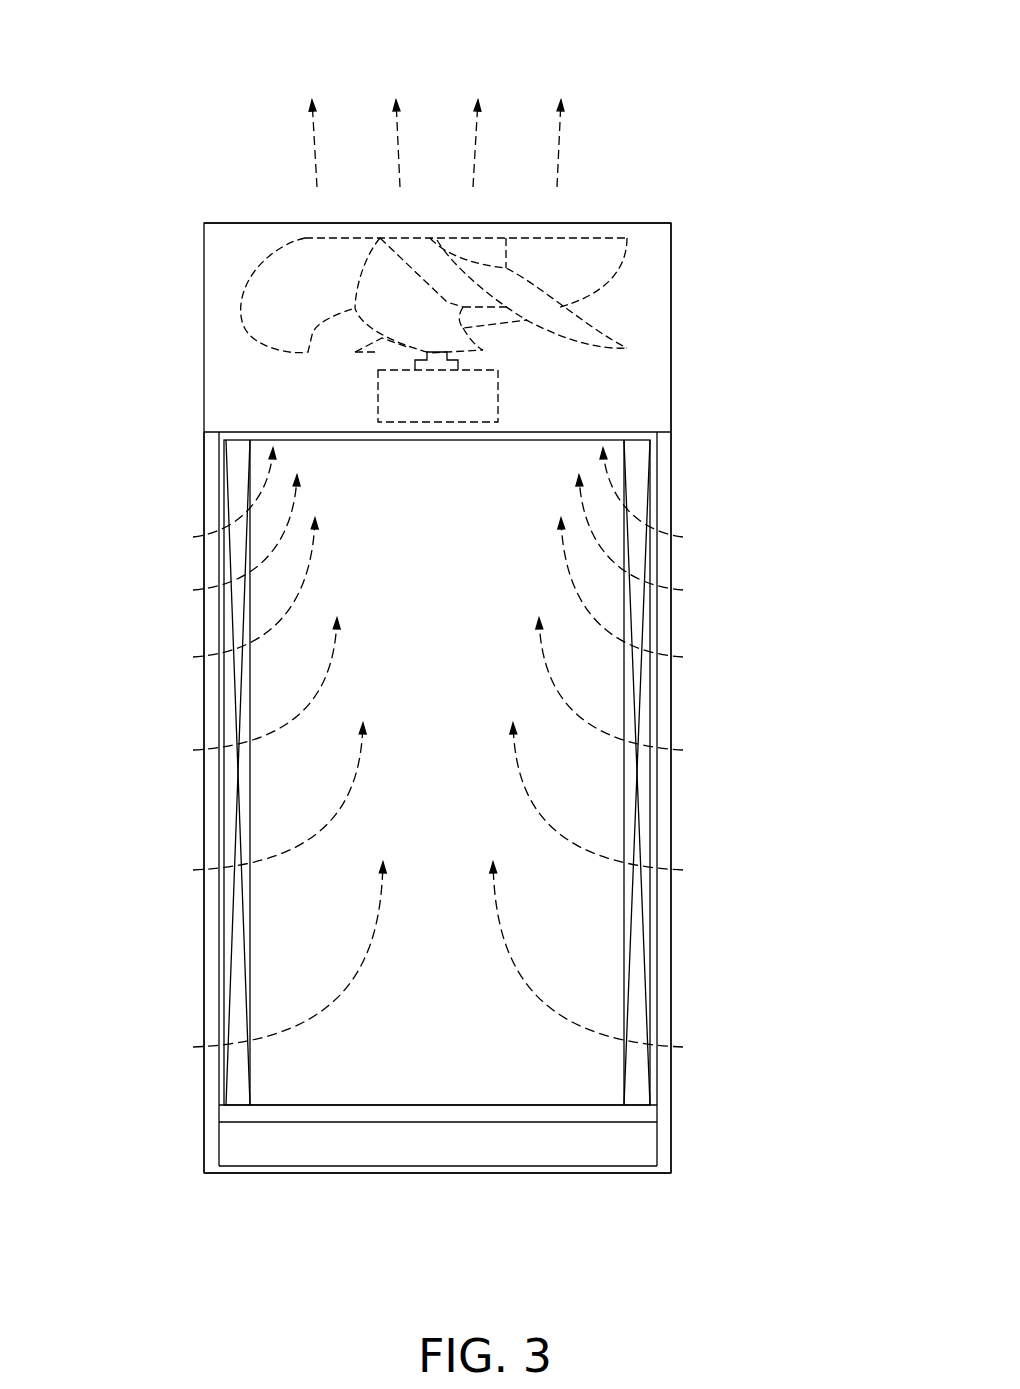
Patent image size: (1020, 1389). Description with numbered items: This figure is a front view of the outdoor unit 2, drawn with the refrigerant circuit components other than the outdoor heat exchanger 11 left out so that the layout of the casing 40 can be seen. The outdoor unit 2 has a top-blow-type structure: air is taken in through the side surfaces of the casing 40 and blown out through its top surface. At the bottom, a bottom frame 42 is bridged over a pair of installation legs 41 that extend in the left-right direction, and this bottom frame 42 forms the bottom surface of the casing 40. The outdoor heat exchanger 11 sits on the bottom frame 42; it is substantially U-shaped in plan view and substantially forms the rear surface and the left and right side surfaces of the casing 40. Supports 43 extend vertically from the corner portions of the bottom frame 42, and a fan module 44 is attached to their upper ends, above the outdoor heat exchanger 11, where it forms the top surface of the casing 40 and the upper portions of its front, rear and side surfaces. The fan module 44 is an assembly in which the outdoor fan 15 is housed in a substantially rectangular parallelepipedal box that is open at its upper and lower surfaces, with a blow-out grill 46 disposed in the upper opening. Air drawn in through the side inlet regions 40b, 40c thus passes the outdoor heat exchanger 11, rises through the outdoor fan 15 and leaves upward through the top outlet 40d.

The outdoor unit 2 is at (690, 88).
The casing 40 is at (689, 258).
The air outlet 40d is at (596, 216).
The left air inlet 40b is at (200, 636).
The right air inlet 40c is at (676, 636).
The blow-out grill 46 is at (325, 222).
The outdoor fan 15 is at (634, 343).
The fan module 44 is at (682, 390).
The outdoor heat exchanger 11 is at (640, 473).
The supports 43 is at (208, 790).
The installation legs 41 is at (273, 1170).
The bottom frame 42 is at (558, 1119).